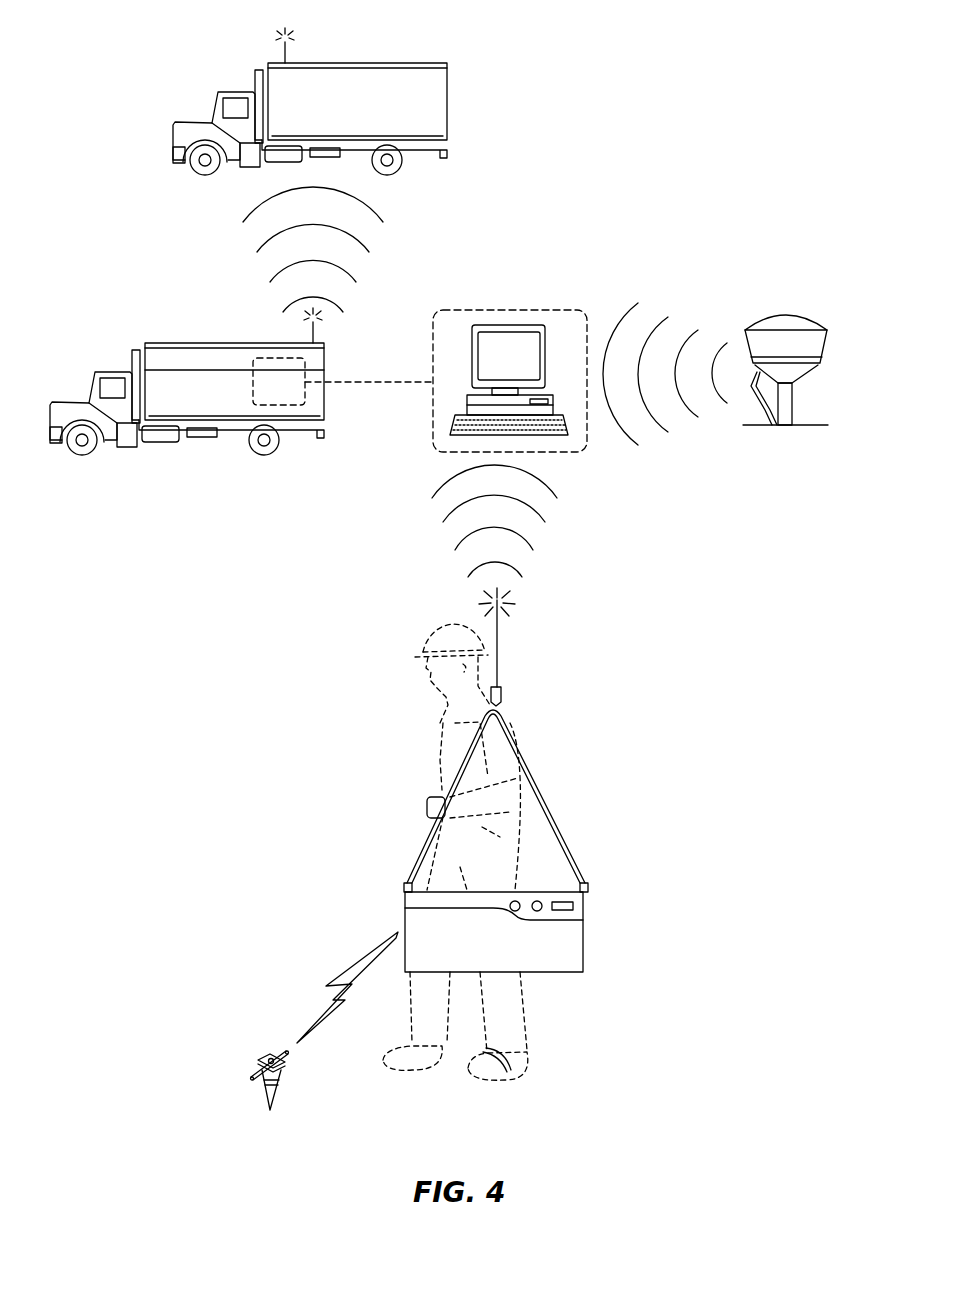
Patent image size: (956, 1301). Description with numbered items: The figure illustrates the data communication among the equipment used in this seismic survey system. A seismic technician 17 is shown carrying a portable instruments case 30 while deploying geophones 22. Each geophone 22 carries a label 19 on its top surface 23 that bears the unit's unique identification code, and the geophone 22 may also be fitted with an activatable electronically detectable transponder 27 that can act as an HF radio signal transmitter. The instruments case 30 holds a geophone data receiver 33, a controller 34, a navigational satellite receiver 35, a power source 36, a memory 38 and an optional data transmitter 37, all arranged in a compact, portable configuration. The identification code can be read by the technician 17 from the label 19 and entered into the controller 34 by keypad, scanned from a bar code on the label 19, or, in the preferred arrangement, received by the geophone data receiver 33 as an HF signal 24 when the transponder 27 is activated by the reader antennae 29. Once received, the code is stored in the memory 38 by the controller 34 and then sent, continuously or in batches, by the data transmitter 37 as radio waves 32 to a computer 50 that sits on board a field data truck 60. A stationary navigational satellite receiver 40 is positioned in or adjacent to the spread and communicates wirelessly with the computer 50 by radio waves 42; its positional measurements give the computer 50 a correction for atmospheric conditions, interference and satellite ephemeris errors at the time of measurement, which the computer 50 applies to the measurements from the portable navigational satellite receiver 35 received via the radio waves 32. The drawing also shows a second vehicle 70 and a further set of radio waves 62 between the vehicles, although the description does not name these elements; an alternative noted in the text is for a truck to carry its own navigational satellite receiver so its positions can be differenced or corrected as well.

The seismic technician 17 is at (440, 763).
The label 19 is at (275, 1058).
The geophone 22 is at (262, 1062).
The top surface 23 is at (283, 1067).
The HF signal 24 is at (337, 947).
The transponder 27 is at (264, 1080).
The reader antennae 29 is at (505, 1070).
The instruments case 30 is at (608, 923).
The radio waves 32 is at (442, 550).
The geophone data receiver 33 is at (575, 940).
The controller 34 is at (420, 948).
The navigational satellite receiver 35 is at (560, 952).
The power source 36 is at (455, 948).
The data transmitter 37 is at (492, 952).
The memory 38 is at (530, 952).
The stationary navigational satellite receiver 40 is at (783, 315).
The radio waves 42 is at (685, 310).
The computer 50 is at (508, 310).
The field data truck 60 is at (133, 335).
The vehicle communication signal 62 is at (262, 272).
The second service vehicle 70 is at (352, 55).